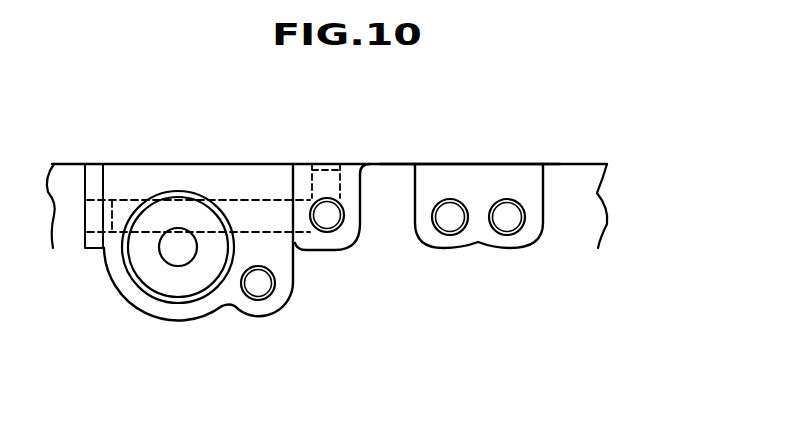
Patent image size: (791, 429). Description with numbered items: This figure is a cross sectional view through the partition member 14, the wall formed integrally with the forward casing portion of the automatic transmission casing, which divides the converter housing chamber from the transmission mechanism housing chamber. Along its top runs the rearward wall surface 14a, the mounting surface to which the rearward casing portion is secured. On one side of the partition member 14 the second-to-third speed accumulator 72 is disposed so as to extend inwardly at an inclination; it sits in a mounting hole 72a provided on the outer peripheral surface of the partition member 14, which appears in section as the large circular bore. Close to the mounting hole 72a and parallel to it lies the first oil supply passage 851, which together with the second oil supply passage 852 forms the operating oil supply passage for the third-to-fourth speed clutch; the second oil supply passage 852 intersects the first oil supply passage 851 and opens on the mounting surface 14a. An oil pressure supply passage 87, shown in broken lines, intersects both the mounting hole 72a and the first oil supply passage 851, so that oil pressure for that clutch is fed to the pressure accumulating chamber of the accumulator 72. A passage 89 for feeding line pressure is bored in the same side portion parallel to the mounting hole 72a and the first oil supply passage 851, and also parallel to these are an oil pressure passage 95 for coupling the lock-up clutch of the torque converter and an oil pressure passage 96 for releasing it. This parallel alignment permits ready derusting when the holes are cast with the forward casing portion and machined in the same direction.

The partition member 14 is at (603, 191).
The rearward wall surface 14a is at (400, 164).
The 2-3 accumulator 72 is at (117, 309).
The mounting hole 72a is at (172, 304).
The first oil supply passage 851 is at (327, 220).
The second oil supply passage 852 is at (330, 170).
The oil pressure supply passage 87 is at (264, 200).
The passage 89 is at (258, 284).
The oil pressure passage 95 is at (451, 224).
The oil pressure passage 96 is at (509, 221).